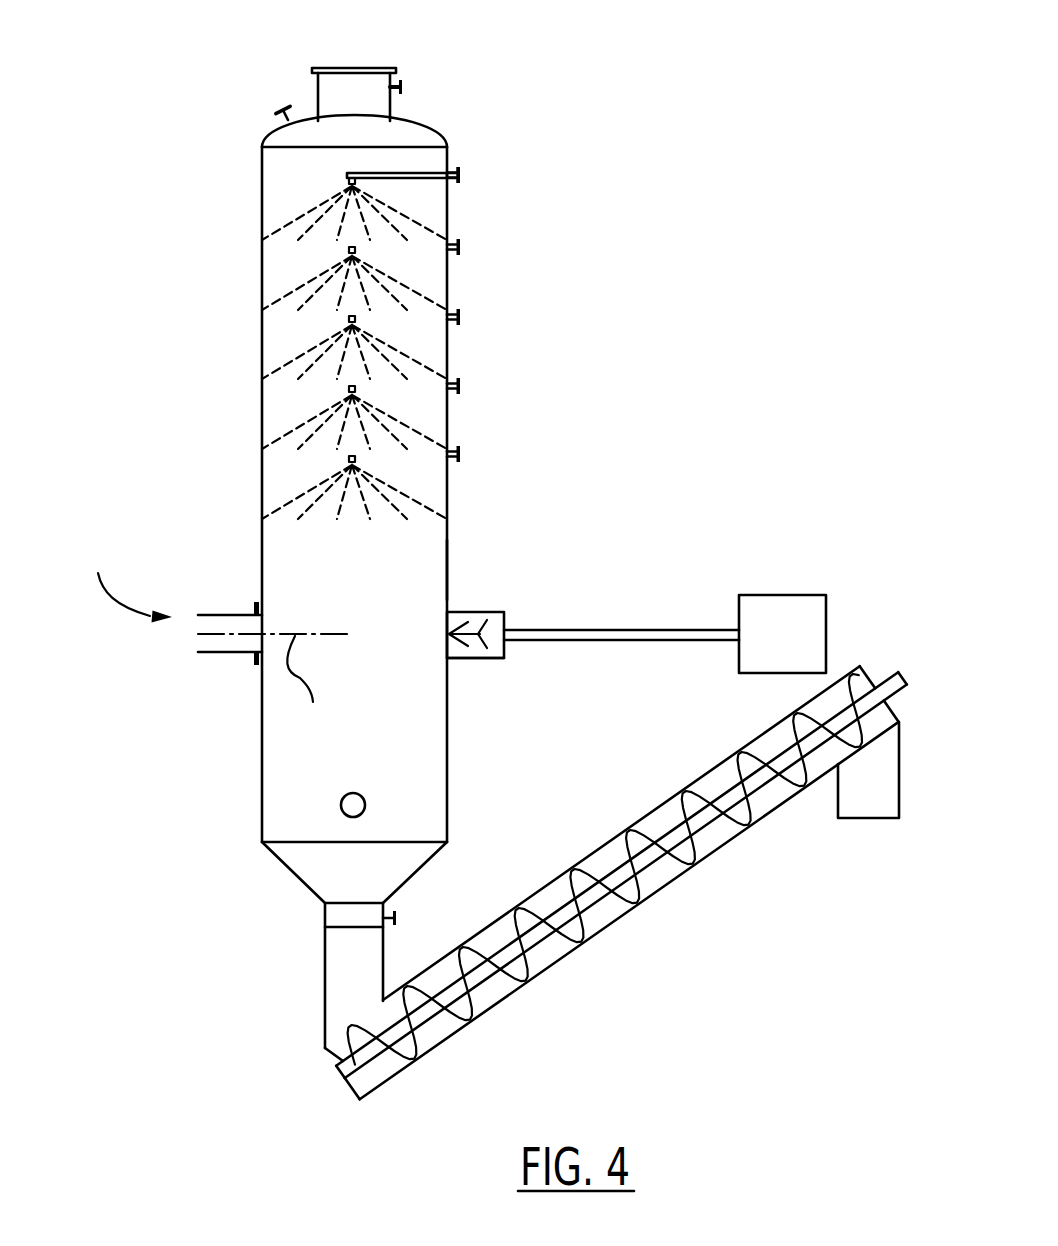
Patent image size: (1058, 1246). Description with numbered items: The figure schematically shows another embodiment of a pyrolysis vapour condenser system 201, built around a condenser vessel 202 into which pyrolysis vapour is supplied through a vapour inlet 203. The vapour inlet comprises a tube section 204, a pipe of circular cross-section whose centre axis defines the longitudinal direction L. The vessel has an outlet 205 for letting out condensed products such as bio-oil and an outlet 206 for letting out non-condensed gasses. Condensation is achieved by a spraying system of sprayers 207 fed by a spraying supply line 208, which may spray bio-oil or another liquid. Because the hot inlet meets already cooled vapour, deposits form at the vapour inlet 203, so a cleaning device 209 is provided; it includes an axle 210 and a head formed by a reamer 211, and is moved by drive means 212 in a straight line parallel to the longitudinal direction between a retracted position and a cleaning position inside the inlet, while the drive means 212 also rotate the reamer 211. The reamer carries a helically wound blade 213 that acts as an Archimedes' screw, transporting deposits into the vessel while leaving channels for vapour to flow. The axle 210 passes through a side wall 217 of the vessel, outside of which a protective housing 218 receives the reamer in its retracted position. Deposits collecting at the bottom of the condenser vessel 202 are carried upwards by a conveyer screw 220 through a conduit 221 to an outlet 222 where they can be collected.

The pyrolysis vapour condenser system 201 is at (190, 157).
The condenser vessel 202 is at (262, 400).
The vapour inlet 203 is at (123, 579).
The tube section 204 is at (198, 652).
The outlet for condensed products 205 is at (351, 793).
The outlet for non-condensed gasses 206 is at (401, 88).
The sprayers 207 is at (350, 182).
The spraying supply line 208 is at (410, 173).
The cleaning device 209 is at (624, 630).
The axle 210 is at (680, 642).
The reamer 211 is at (475, 622).
The drive means 212 is at (772, 608).
The blade 213 is at (470, 640).
The side wall 217 is at (447, 570).
The protective housing 218 is at (500, 656).
The conveyer screw 220 is at (475, 1003).
The conduit 221 is at (566, 956).
The outlet 222 is at (867, 806).